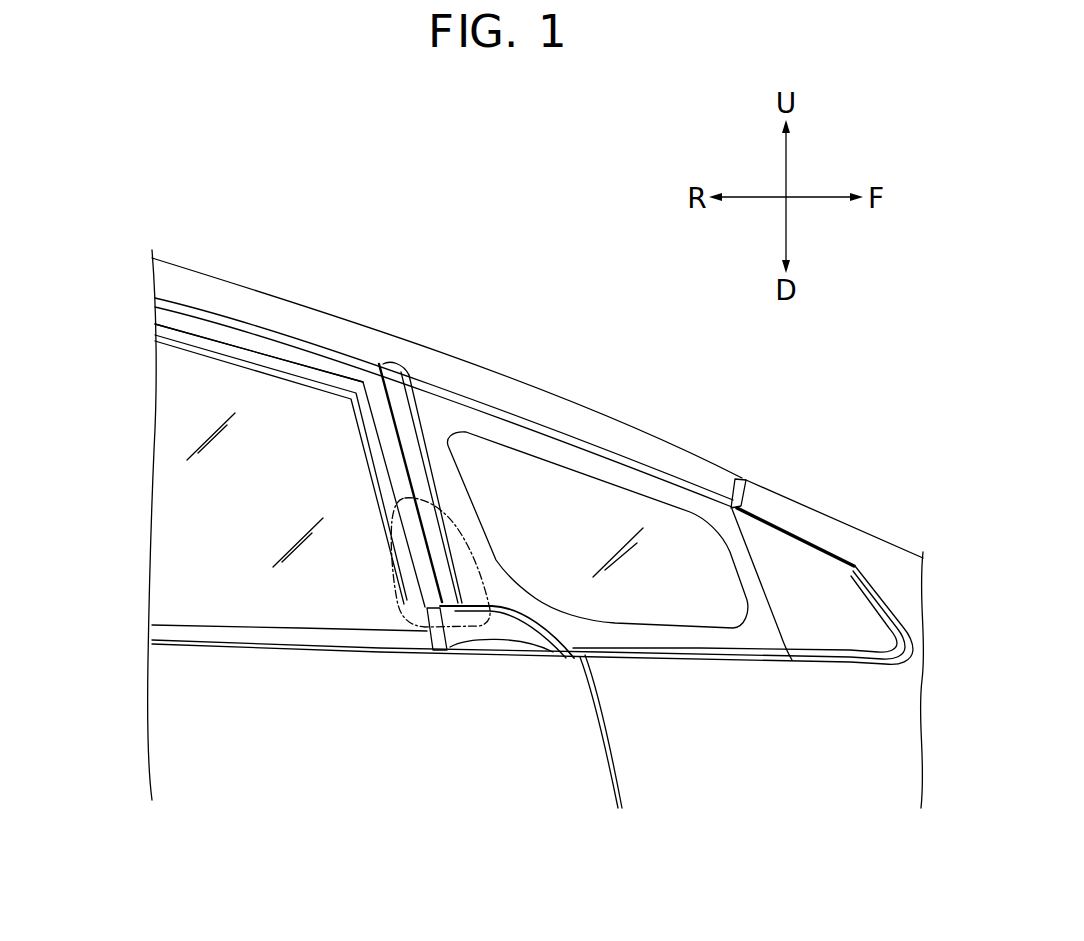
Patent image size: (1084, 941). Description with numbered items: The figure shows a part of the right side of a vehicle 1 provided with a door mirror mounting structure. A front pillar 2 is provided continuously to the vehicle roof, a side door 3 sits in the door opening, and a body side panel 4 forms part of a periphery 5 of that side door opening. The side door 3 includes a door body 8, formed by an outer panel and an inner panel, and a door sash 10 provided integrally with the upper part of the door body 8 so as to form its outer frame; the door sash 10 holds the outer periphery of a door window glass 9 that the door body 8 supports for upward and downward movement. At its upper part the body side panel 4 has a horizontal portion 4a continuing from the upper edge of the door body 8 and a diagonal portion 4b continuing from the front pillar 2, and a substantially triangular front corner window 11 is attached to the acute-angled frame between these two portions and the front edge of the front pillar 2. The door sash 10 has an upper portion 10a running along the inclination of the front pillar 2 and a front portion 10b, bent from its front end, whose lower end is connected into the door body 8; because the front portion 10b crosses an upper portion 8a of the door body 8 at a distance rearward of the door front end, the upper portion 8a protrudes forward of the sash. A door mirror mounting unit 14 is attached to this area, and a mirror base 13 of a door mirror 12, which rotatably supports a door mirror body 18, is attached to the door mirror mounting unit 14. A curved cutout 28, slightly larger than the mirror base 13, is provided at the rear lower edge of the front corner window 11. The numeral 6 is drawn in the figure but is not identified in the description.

The vehicle 1 is at (489, 276).
The front pillar 2 is at (313, 319).
The side door 3 is at (92, 574).
The body side panel 4 is at (765, 775).
The horizontal portion 4a is at (749, 666).
The diagonal portion 4b is at (853, 541).
The periphery of side door opening 5 is at (609, 764).
The door outer panel 6 is at (348, 772).
The door body 8 is at (180, 679).
The upper portion of door body 8a is at (567, 648).
The door window glass 9 is at (176, 381).
The door sash 10 is at (318, 360).
The upper portion of door sash 10a is at (252, 333).
The front portion of door sash 10b is at (385, 418).
The front corner window 11 is at (674, 524).
The door mirror 12 is at (401, 639).
The mirror base 13 is at (487, 652).
The door mirror mounting unit 14 is at (537, 645).
The door mirror body 18 is at (393, 578).
The curved cutout 28 is at (500, 613).